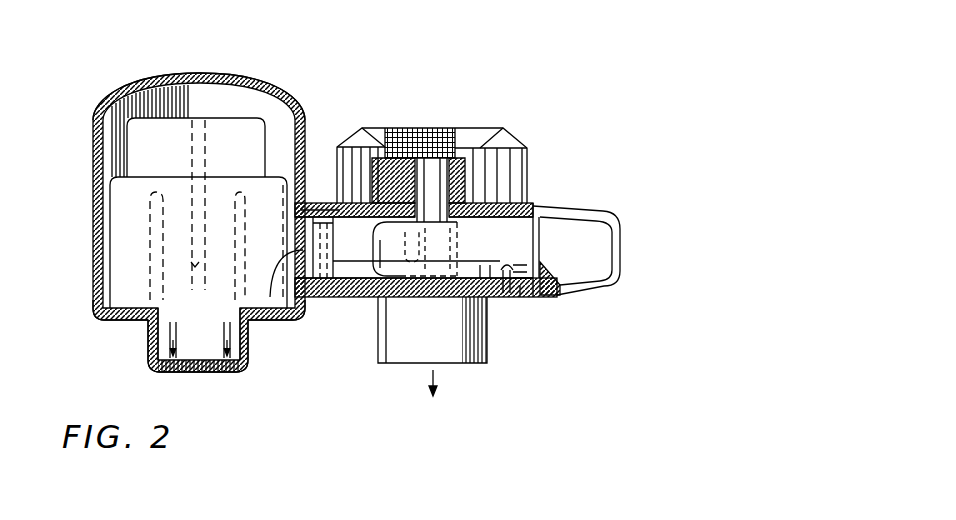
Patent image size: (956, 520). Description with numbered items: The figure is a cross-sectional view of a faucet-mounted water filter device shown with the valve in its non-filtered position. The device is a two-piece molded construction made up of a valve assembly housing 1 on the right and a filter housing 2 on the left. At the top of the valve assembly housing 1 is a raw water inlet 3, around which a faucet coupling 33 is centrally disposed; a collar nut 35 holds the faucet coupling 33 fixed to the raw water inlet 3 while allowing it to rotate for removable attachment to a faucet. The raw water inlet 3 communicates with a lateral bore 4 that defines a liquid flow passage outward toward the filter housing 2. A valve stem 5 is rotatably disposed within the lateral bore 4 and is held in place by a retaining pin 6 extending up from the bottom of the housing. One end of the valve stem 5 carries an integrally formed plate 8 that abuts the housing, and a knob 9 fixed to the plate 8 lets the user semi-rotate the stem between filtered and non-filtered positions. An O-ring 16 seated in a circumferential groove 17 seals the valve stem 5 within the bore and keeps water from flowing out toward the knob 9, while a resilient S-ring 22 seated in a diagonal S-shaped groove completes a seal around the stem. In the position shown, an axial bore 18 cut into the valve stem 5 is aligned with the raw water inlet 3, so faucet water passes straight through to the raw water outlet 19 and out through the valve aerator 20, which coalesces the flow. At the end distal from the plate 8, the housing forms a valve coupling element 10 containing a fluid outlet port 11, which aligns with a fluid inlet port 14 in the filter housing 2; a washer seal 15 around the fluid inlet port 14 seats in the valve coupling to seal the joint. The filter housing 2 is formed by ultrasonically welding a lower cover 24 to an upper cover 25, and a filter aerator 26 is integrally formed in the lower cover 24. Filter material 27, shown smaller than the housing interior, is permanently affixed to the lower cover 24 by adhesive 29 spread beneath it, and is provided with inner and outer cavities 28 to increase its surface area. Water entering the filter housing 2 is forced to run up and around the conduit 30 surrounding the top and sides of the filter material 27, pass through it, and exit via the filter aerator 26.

The valve assembly housing 1 is at (517, 296).
The filter housing 2 is at (92, 243).
The raw water inlet 3 is at (443, 205).
The lateral bore 4 is at (360, 255).
The valve stem 5 is at (512, 238).
The retaining pin 6 is at (499, 288).
The plate 8 is at (543, 292).
The knob 9 is at (613, 213).
The valve coupling element 10 is at (309, 205).
The fluid outlet port 11 is at (322, 205).
The fluid inlet port 14 is at (292, 302).
The washer seal 15 is at (328, 262).
The O-ring 16 is at (488, 297).
The circumferential groove 17 is at (486, 243).
The axial bore 18 is at (430, 258).
The raw water outlet 19 is at (439, 275).
The valve aerator 20 is at (402, 364).
The S-ring 22 is at (358, 287).
The lower cover 24 is at (263, 330).
The upper cover 25 is at (206, 68).
The filter aerator 26 is at (214, 374).
The filter material 27 is at (140, 160).
The inner and outer cavities 28 is at (190, 142).
The adhesive 29 is at (125, 322).
The conduit 30 is at (234, 104).
The faucet coupling 33 is at (368, 130).
The collar nut 35 is at (430, 205).